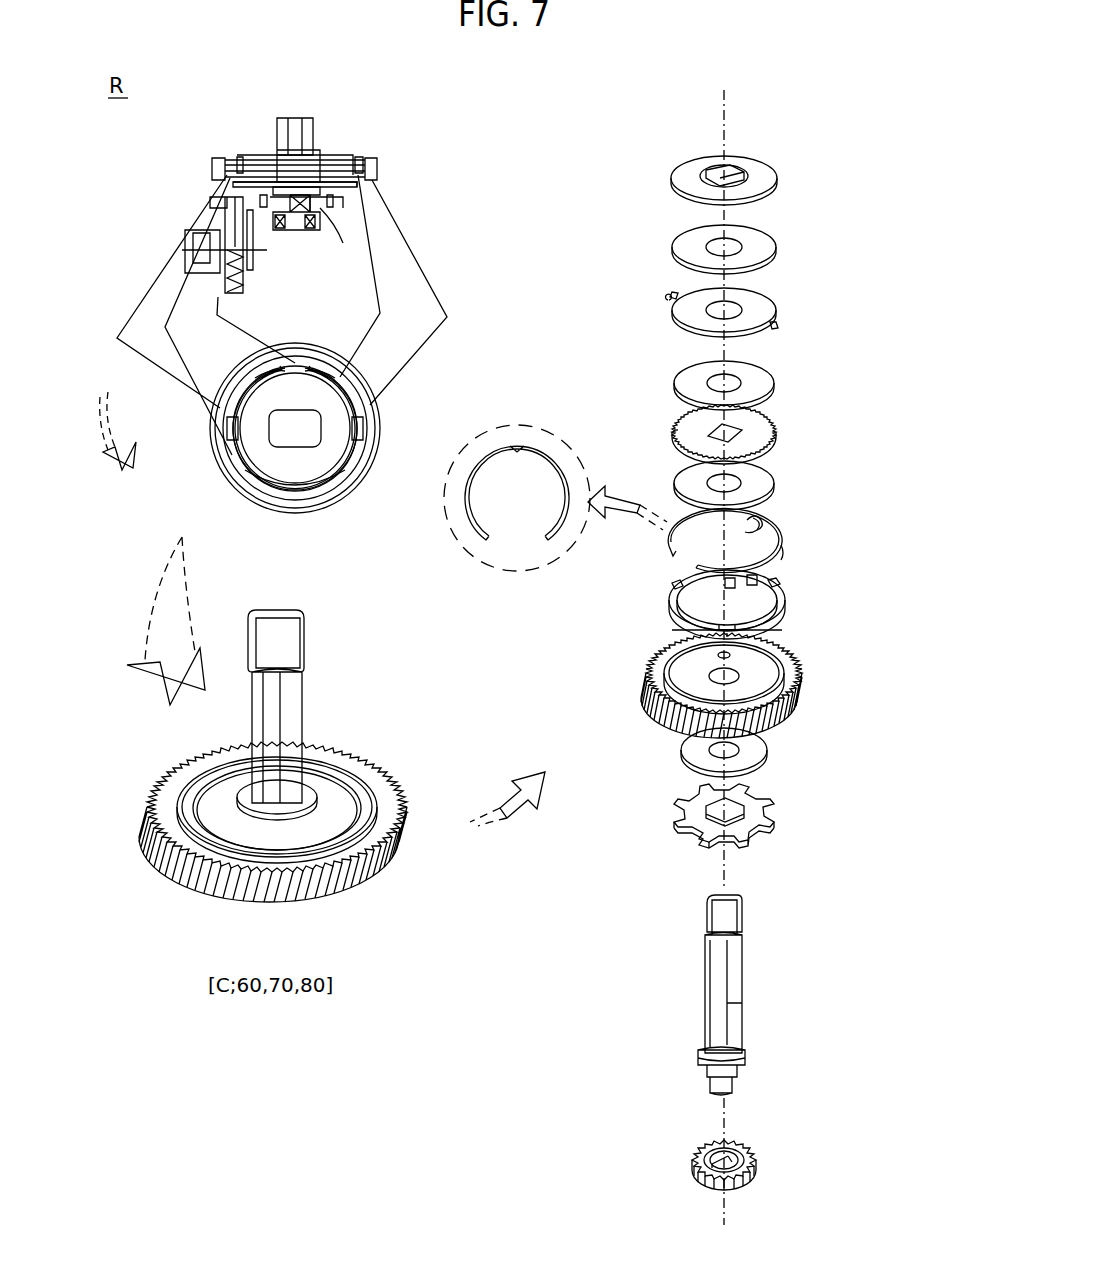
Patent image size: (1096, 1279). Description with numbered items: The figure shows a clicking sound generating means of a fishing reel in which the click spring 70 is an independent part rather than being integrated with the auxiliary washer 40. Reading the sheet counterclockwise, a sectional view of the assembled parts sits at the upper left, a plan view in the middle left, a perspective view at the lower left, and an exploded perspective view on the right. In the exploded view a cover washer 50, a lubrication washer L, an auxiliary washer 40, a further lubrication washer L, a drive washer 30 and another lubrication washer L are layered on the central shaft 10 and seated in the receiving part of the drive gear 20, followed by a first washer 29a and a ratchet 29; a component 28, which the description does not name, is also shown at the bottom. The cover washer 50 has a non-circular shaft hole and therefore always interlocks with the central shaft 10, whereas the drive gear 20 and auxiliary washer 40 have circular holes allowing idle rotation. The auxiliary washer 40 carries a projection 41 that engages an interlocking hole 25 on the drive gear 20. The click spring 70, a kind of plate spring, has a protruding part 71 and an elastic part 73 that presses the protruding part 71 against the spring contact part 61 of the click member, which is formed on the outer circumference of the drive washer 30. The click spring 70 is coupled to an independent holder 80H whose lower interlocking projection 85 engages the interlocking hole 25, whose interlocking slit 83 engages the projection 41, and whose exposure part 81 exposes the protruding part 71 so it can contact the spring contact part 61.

The central shaft 10 is at (320, 124).
The drive gear 20 is at (378, 168).
The interlocking hole 25 is at (728, 657).
The pinion gear 28 is at (340, 200).
The ratchet 29 is at (345, 185).
The first washer 29a is at (760, 752).
The drive washer 30 is at (783, 410).
The auxiliary washer 40 is at (775, 288).
The projection 41 is at (668, 300).
The cover washer 50 is at (755, 140).
The lubrication washer L is at (748, 235).
The spring contact part 61 is at (675, 430).
The click spring 70 is at (315, 355).
The protruding part 71 is at (752, 530).
The elastic part 73 is at (784, 557).
The holder 80H is at (800, 603).
The exposure part 81 is at (755, 578).
The interlocking slit 83 is at (675, 585).
The lower interlocking projection 85 is at (675, 631).